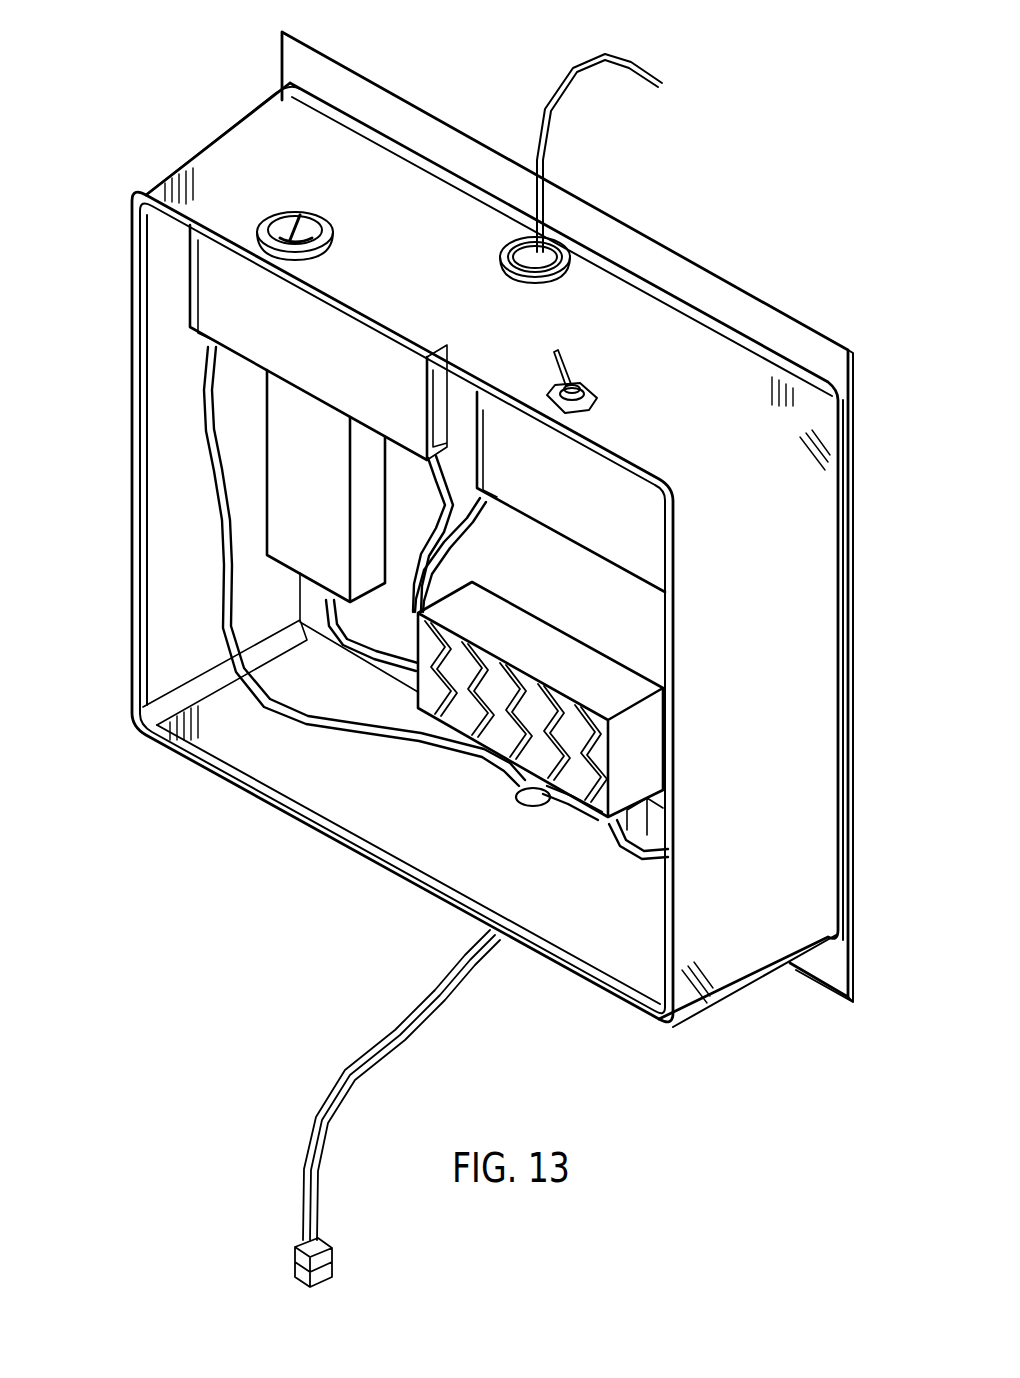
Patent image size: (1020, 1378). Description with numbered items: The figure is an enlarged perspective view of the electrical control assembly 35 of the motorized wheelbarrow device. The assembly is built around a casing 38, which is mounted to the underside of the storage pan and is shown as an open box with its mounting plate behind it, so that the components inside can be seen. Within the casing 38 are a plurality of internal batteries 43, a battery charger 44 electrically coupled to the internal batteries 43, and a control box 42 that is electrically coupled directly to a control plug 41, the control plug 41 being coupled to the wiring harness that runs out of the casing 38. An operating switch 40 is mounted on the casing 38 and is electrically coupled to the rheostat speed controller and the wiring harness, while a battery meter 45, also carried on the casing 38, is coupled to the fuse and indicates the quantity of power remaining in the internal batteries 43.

The electrical control assembly 35 is at (138, 1022).
The casing 38 is at (653, 330).
The operating switch 40 is at (593, 412).
The control plug 41 is at (330, 1240).
The control box 42 is at (580, 780).
The internal batteries 43 is at (208, 295).
The battery charger 44 is at (288, 497).
The battery meter 45 is at (320, 223).